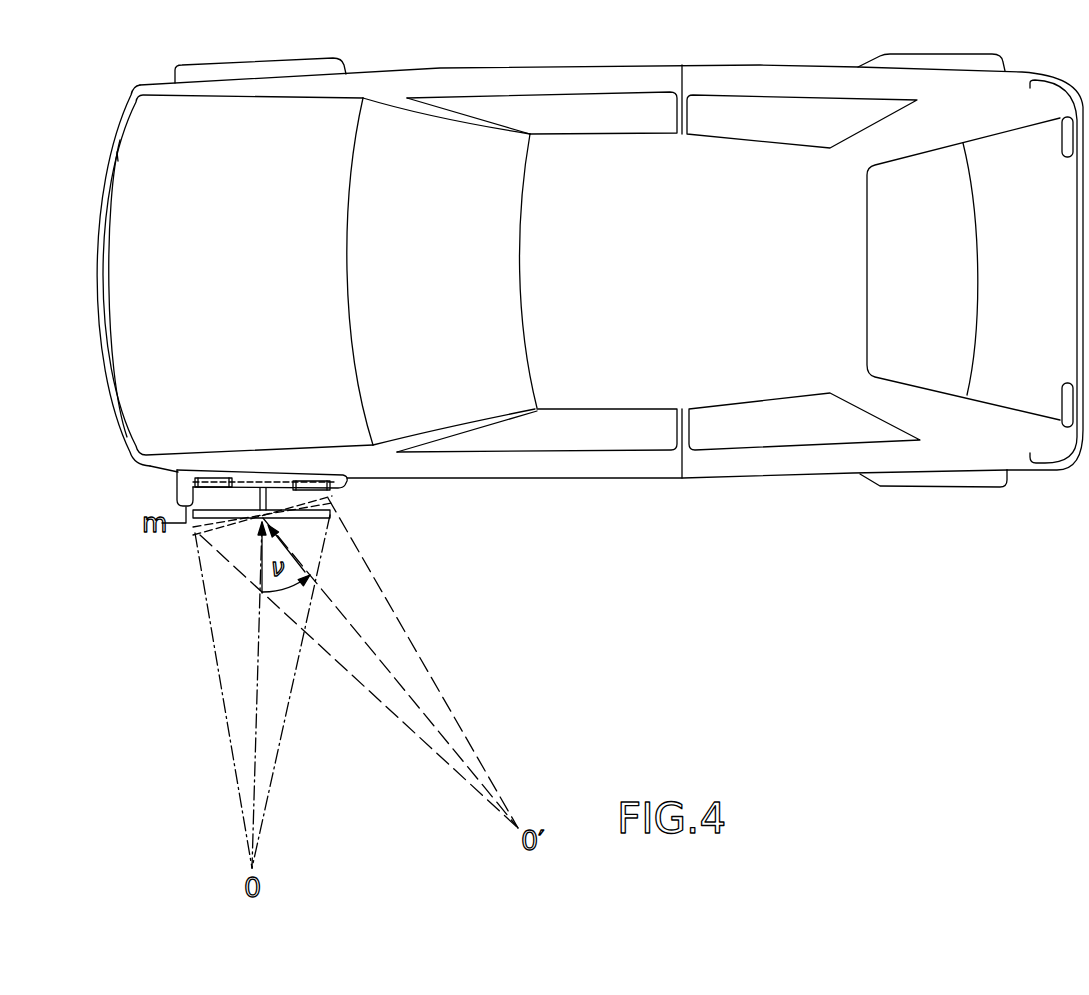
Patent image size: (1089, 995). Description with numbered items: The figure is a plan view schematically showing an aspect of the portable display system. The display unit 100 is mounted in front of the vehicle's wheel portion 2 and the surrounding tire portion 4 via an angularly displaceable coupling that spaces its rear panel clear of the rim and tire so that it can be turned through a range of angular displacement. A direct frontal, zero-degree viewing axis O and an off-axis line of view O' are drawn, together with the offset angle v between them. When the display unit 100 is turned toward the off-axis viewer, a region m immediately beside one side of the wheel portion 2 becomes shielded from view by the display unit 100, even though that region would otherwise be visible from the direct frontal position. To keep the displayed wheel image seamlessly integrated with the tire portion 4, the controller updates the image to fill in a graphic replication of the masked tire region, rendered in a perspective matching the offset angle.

The wheel portion 2 is at (207, 511).
The tire portion 4 is at (183, 472).
The display unit 100 is at (313, 522).